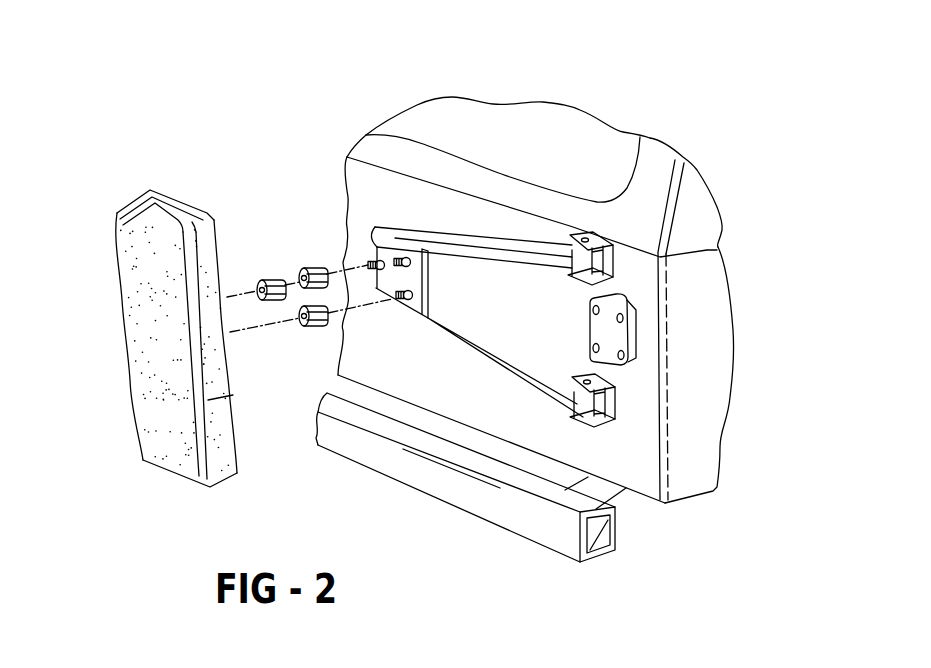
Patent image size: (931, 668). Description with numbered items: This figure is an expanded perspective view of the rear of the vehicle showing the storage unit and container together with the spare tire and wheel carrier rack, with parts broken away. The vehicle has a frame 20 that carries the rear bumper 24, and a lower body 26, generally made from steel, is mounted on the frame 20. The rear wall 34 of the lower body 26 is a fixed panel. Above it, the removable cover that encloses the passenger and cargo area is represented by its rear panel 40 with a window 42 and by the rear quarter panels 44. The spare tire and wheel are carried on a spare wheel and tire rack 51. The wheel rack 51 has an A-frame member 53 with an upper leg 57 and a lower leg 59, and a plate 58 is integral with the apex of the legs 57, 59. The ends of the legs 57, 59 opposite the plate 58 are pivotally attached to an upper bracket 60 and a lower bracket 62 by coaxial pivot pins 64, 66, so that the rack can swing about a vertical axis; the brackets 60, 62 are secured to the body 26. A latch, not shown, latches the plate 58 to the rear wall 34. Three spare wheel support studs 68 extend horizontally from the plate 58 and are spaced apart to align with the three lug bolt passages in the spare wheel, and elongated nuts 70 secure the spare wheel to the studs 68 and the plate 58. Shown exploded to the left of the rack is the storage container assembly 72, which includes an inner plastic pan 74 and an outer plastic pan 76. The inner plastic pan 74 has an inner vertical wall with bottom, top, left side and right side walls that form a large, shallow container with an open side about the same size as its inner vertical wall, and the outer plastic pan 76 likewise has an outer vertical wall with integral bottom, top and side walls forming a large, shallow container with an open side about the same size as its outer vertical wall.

The frame 20 is at (530, 361).
The rear bumper 24 is at (543, 532).
The lower body 26 is at (693, 485).
The rear wall 34 is at (353, 172).
The rear panel 40 is at (378, 149).
The window 42 is at (438, 108).
The rear quarter panels 44 is at (688, 200).
The spare wheel and tire rack 51 is at (502, 386).
The A-frame member 53 is at (533, 380).
The upper leg 57 is at (388, 230).
The plate 58 is at (377, 252).
The lower leg 59 is at (470, 343).
The upper bracket 60 is at (668, 240).
The lower bracket 62 is at (674, 424).
The pivot pin 64 is at (586, 238).
The pivot pin 66 is at (600, 377).
The spare wheel support studs 68 is at (410, 300).
The elongated nuts 70 is at (268, 278).
The storage container assembly 72 is at (144, 333).
The inner plastic pan 74 is at (179, 194).
The outer plastic pan 76 is at (130, 222).